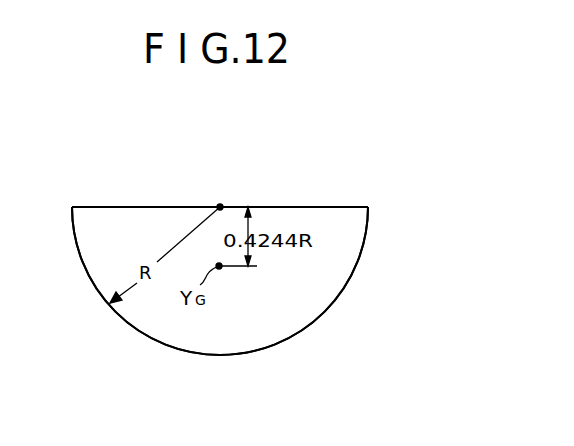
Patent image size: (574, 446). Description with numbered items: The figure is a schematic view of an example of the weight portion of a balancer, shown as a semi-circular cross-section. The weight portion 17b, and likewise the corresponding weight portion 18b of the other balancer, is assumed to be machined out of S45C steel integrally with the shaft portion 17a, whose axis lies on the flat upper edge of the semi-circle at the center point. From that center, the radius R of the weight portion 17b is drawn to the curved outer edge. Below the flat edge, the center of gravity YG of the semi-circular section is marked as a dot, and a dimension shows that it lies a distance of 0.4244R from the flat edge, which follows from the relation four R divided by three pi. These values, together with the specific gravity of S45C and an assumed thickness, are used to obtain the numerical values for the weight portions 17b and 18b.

The shaft portion 17a is at (220, 207).
The weight portion 17b is at (265, 338).
The weight portion 18b is at (220, 281).